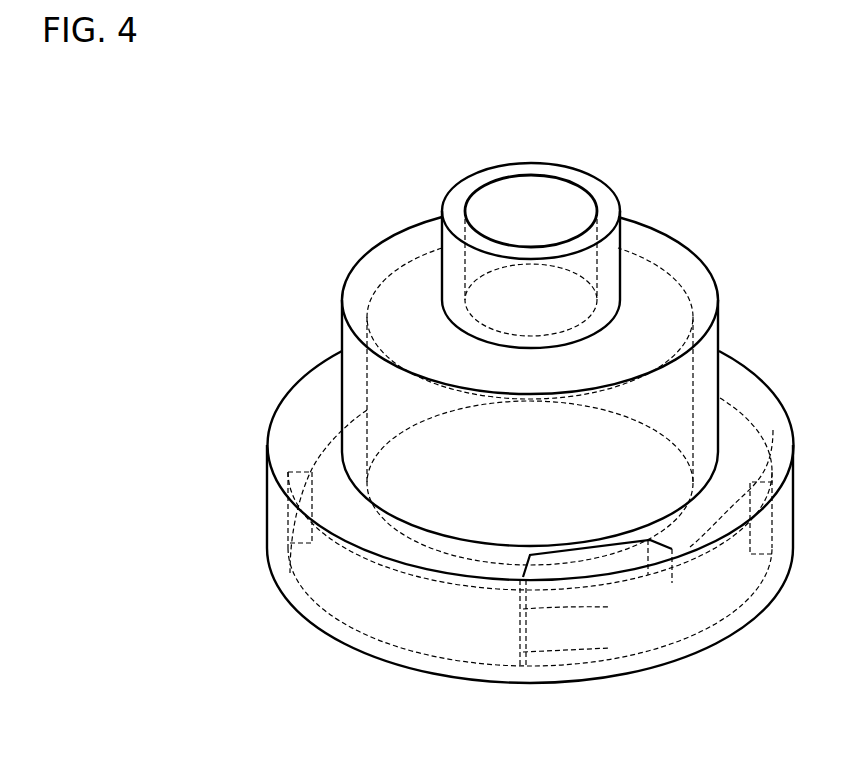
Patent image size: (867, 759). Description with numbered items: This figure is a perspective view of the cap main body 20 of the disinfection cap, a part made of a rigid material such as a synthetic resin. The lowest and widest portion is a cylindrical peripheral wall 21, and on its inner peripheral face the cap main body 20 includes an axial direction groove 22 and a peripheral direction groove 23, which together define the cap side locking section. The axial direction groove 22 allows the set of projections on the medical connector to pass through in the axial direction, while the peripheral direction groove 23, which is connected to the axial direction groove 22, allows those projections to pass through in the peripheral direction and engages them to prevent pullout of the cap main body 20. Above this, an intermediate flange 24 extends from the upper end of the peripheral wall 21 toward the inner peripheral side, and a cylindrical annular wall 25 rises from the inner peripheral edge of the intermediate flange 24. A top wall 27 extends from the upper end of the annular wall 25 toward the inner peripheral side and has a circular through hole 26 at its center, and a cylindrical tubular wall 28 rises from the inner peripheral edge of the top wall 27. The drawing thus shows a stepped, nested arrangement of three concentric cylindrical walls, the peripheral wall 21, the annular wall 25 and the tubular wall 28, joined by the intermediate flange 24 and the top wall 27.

The cap main body 20 is at (263, 197).
The peripheral wall 21 is at (277, 523).
The axial direction groove 22 is at (383, 642).
The peripheral direction groove 23 is at (608, 608).
The intermediate flange 24 is at (370, 535).
The annular wall 25 is at (358, 388).
The through hole 26 is at (520, 196).
The top wall 27 is at (395, 300).
The tubular wall 28 is at (455, 268).